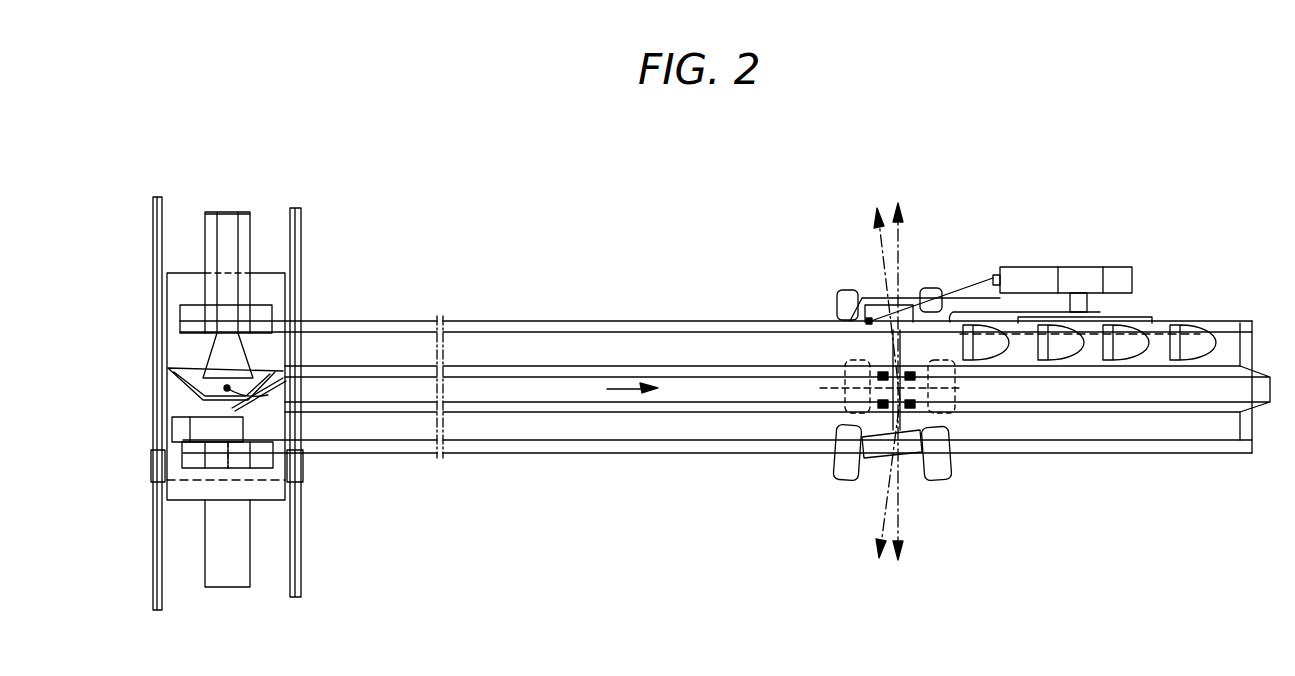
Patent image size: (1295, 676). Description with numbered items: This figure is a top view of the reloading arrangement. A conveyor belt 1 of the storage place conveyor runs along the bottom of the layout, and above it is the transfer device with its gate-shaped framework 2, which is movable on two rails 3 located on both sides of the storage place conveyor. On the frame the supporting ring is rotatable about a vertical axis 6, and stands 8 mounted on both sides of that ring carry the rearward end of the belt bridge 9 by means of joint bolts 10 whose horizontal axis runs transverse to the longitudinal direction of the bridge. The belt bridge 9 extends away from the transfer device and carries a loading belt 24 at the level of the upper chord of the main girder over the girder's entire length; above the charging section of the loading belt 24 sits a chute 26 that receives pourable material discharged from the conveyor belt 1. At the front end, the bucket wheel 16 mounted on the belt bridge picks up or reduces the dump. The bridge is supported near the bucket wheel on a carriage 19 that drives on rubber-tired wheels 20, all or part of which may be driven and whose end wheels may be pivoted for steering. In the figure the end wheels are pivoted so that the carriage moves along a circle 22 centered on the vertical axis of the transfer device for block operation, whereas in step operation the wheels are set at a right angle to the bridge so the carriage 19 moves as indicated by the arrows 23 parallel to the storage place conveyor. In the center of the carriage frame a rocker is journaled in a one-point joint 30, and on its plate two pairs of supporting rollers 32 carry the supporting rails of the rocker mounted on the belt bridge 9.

The conveyor belt 1 is at (243, 222).
The gate-shaped framework 2 is at (267, 493).
The rails 3 is at (292, 537).
The vertical axis 6 is at (288, 411).
The stands 8 is at (262, 316).
The belt bridge 9 is at (556, 470).
The joint bolts 10 is at (222, 465).
The bucket wheel 16 is at (1185, 338).
The carriage 19 is at (816, 468).
The wheels 20 is at (850, 292).
The circle 22 is at (882, 234).
The arrows 23 is at (905, 237).
The loading belt 24 is at (543, 385).
The chute 26 is at (298, 372).
The one-point joint 30 is at (850, 385).
The supporting rollers 32 is at (872, 378).